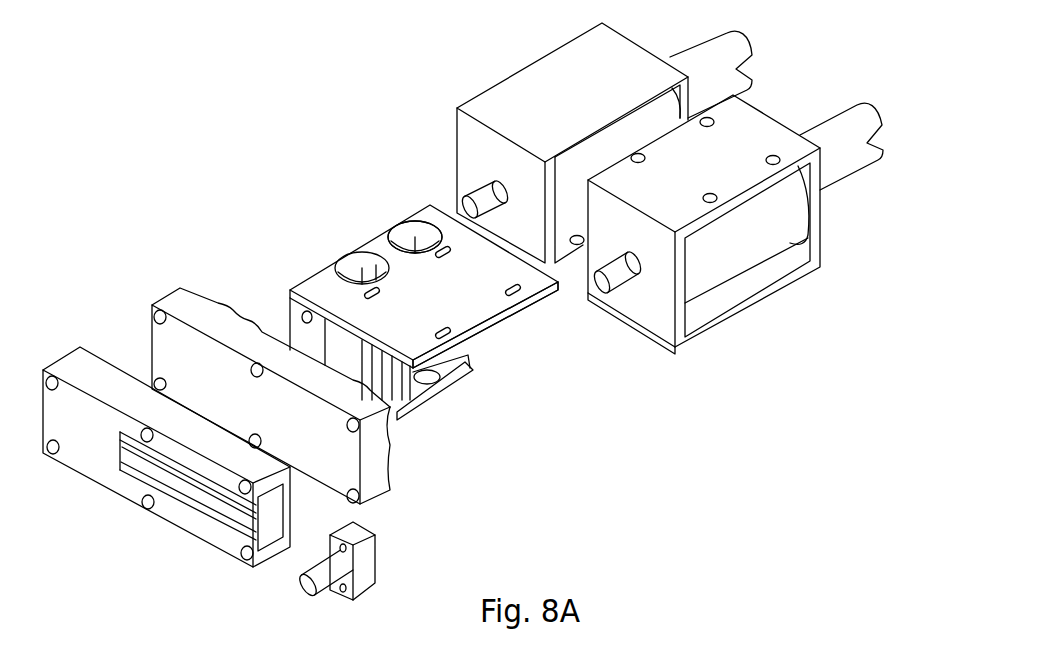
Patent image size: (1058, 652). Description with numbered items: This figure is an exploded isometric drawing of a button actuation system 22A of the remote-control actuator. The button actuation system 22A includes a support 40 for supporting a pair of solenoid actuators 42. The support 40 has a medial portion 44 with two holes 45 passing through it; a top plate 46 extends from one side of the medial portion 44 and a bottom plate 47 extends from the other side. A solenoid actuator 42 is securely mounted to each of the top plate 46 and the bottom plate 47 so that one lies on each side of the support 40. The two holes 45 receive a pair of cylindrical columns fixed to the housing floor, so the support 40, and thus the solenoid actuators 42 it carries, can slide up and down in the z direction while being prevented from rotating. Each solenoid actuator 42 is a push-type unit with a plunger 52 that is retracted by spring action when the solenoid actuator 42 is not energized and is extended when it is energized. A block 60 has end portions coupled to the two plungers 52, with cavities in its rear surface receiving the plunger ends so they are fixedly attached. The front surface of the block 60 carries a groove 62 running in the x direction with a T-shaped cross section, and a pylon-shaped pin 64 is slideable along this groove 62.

The button actuation system 22A is at (299, 142).
The support 40 is at (370, 238).
The solenoid actuator 42 is at (506, 68).
The medial portion 44 is at (290, 292).
The hole 45 is at (416, 234).
The top plate 46 is at (493, 318).
The bottom plate 47 is at (280, 335).
The plunger 52 is at (617, 283).
The block 60 is at (100, 367).
The groove 62 is at (272, 520).
The pin 64 is at (367, 578).